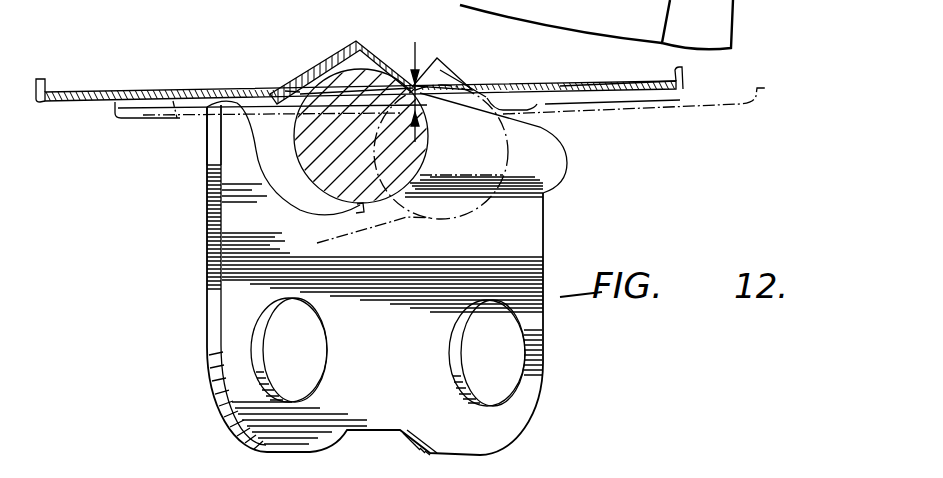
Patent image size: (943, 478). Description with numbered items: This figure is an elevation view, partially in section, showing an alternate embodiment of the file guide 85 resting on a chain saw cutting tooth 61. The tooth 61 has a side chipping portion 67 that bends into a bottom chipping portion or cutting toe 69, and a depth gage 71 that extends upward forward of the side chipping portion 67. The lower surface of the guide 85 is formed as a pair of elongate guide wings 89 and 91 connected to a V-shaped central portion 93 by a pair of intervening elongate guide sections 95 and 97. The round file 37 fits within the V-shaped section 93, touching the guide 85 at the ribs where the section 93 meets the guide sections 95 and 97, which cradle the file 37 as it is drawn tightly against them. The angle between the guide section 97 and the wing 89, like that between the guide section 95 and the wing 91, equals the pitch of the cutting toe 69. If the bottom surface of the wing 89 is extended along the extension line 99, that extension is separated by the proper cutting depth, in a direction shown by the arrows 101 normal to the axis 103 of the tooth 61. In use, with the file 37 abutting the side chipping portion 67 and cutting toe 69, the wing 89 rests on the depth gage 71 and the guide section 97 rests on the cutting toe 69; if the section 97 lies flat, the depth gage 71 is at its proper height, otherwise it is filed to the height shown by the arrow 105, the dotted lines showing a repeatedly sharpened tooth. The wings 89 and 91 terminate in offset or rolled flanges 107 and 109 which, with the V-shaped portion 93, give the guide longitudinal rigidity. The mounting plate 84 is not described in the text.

The file 37 is at (353, 190).
The cutting tooth 61 is at (567, 218).
The side chipping portion 67 is at (560, 166).
The cutting toe 69 is at (537, 104).
The depth gage 71 is at (235, 145).
The plate 84 is at (650, 87).
The guide 85 is at (235, 46).
The guide wing 89 is at (173, 101).
The guide wing 91 is at (613, 104).
The V-shaped central portion 93 is at (342, 61).
The guide section 95 is at (288, 90).
The guide section 97 is at (413, 85).
The extension line 99 is at (318, 110).
The arrows 101 is at (420, 137).
The axis 103 is at (233, 288).
The arrow 105 is at (228, 128).
The flange 107 is at (40, 85).
The flange 109 is at (683, 72).